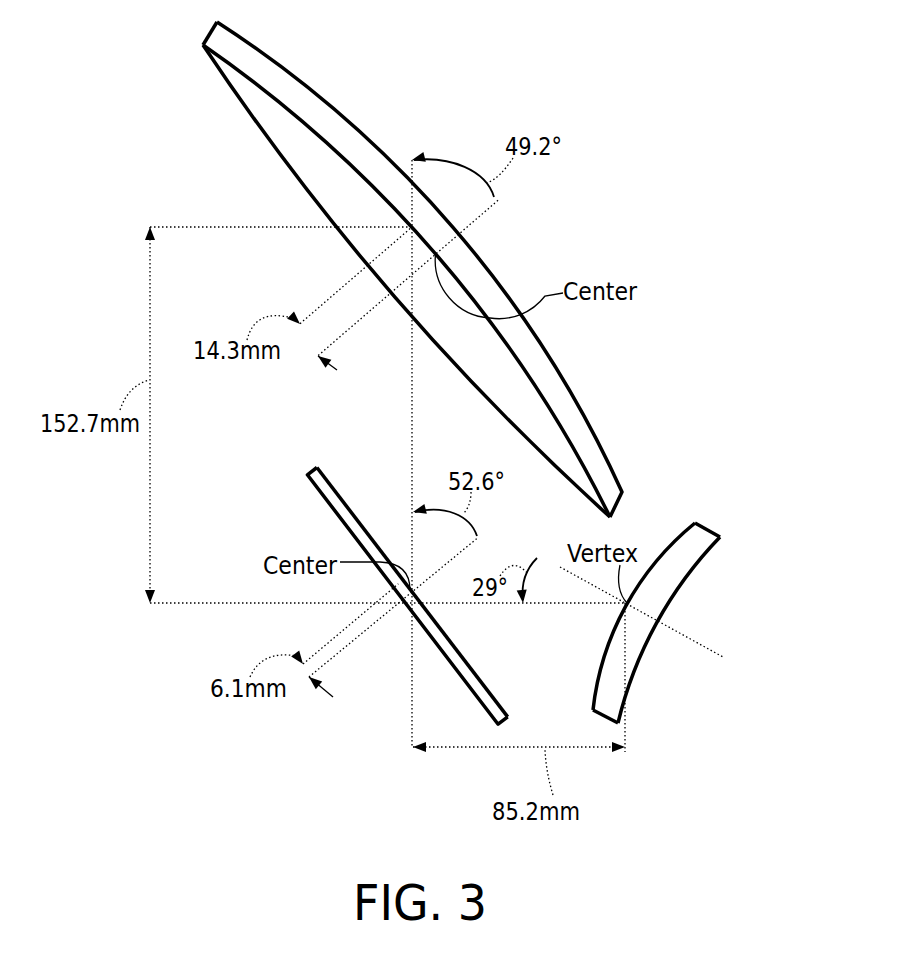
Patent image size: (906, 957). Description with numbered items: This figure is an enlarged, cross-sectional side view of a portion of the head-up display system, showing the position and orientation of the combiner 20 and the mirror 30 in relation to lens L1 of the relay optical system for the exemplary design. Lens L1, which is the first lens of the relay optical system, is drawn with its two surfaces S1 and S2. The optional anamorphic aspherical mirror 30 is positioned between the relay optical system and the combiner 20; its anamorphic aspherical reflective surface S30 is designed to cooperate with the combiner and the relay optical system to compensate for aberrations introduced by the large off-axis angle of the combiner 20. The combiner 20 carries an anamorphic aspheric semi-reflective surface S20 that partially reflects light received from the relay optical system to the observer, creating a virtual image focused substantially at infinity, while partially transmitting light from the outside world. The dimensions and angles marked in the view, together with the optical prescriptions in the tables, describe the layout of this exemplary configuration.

The combiner 20 is at (412, 267).
The anamorphic aspheric semi-reflective surface S20 is at (327, 147).
The anamorphic aspherical mirror 30 is at (390, 586).
The anamorphic aspherical reflective surface S30 is at (344, 508).
The lens L1 is at (687, 591).
The surface S1 is at (680, 536).
The surface S2 is at (693, 550).